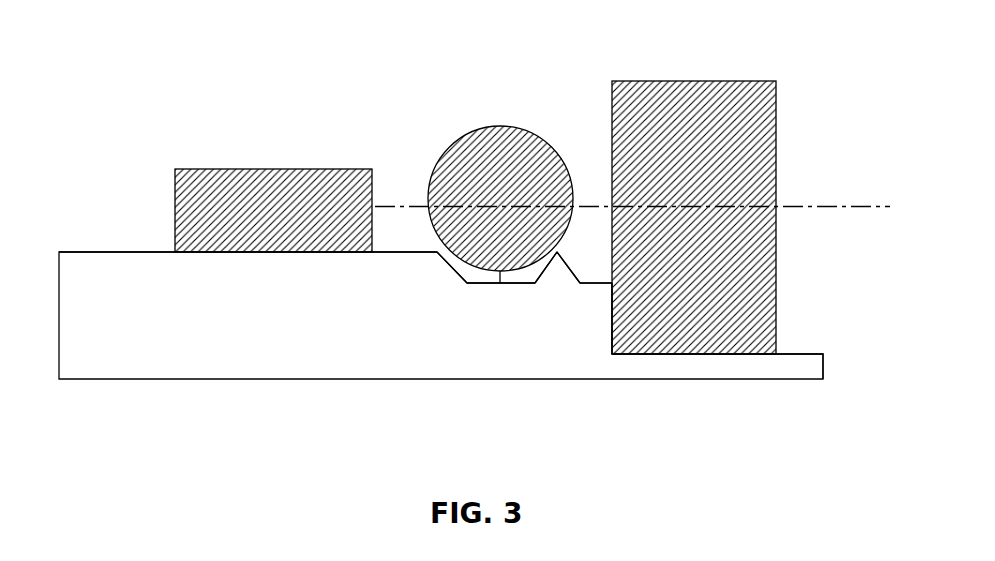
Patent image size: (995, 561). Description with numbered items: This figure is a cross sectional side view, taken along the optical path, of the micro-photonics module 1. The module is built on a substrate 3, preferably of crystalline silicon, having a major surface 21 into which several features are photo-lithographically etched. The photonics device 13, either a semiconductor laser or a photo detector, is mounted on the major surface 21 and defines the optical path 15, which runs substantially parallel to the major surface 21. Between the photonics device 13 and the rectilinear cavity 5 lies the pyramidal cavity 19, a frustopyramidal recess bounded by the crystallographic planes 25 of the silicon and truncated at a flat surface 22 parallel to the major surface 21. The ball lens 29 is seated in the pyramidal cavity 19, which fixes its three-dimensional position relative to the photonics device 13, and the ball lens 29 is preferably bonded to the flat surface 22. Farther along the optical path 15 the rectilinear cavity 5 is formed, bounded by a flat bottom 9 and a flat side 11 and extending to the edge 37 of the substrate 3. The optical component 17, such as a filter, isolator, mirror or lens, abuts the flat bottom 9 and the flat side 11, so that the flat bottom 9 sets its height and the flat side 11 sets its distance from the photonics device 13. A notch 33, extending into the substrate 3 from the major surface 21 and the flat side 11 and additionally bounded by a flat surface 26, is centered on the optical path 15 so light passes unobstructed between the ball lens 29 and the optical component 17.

The micro-photonics module 1 is at (652, 474).
The substrate 3 is at (130, 358).
The rectilinear cavity 5 is at (802, 298).
The flat bottom 9 is at (695, 356).
The flat side 11 is at (609, 337).
The photonics device 13 is at (273, 168).
The optical path 15 is at (875, 206).
The optical component 17 is at (693, 81).
The pyramidal cavity 19 is at (475, 275).
The major surface 21 is at (135, 251).
The flat surface 22 is at (513, 283).
The 111 crystallographic planes 25 is at (453, 270).
The flat surface 26 is at (600, 285).
The ball lens 29 is at (498, 126).
The notch 33 is at (598, 272).
The edge 37 is at (823, 365).